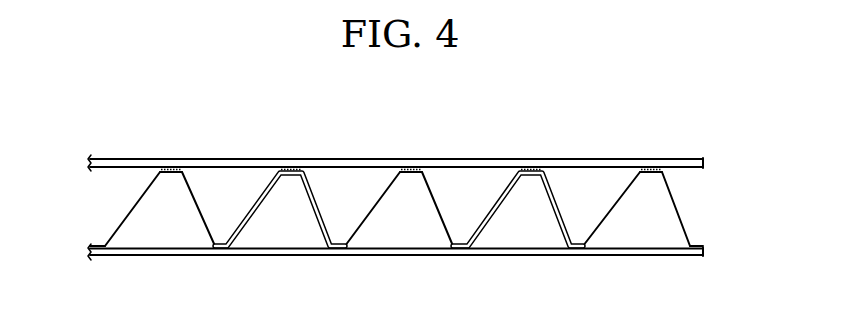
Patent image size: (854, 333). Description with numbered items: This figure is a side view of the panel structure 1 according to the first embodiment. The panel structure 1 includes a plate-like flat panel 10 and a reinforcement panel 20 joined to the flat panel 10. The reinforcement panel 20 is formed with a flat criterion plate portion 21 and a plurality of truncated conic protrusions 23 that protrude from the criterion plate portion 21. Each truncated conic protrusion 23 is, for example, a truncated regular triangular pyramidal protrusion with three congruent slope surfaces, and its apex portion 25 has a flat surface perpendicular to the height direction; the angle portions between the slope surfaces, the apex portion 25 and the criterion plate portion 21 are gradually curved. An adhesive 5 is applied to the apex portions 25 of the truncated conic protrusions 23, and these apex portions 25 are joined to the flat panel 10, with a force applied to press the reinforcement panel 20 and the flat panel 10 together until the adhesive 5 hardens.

The panel structure 1 is at (683, 117).
The flat panel 10 is at (112, 148).
The reinforcement panel 20 is at (107, 258).
The adhesive 5 is at (412, 167).
The criterion plate portion 21 is at (370, 248).
The truncated conic protrusion 23 is at (435, 217).
The apex portion 25 is at (410, 178).